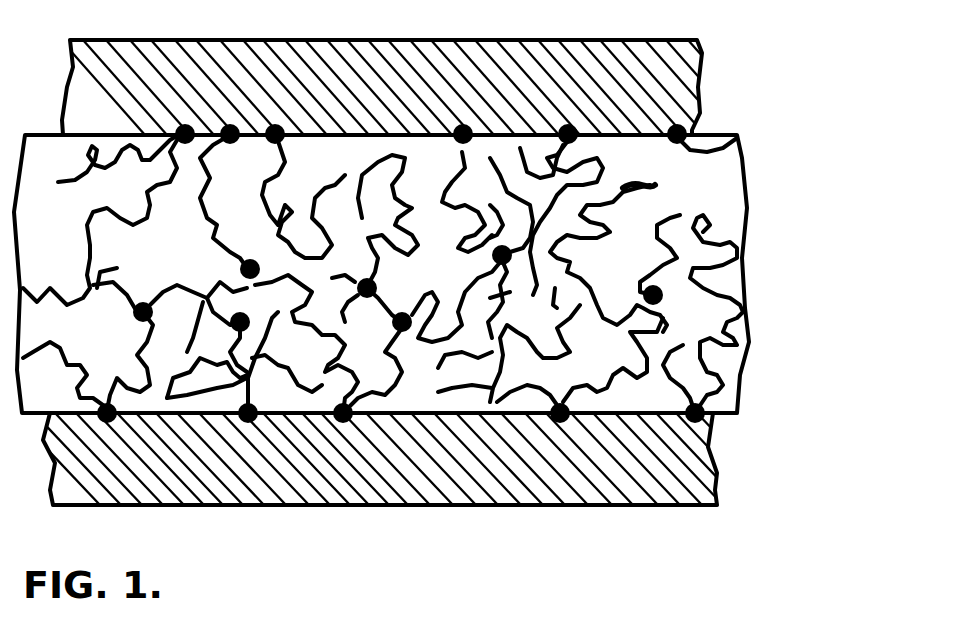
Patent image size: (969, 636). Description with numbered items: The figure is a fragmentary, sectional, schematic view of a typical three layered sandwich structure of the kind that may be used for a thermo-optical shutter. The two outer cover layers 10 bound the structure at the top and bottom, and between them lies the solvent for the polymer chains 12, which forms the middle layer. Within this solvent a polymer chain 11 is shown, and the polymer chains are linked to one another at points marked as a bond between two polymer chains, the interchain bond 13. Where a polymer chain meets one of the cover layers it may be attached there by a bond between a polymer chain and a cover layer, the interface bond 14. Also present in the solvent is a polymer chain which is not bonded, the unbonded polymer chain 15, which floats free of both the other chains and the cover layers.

The cover layers 10 is at (637, 70).
The polymer chain 11 is at (643, 335).
The solvent for the polymer chains 12 is at (643, 160).
The interchain bond 13 is at (663, 296).
The interface bond 14 is at (710, 440).
The unbonded polymer chain 15 is at (633, 195).